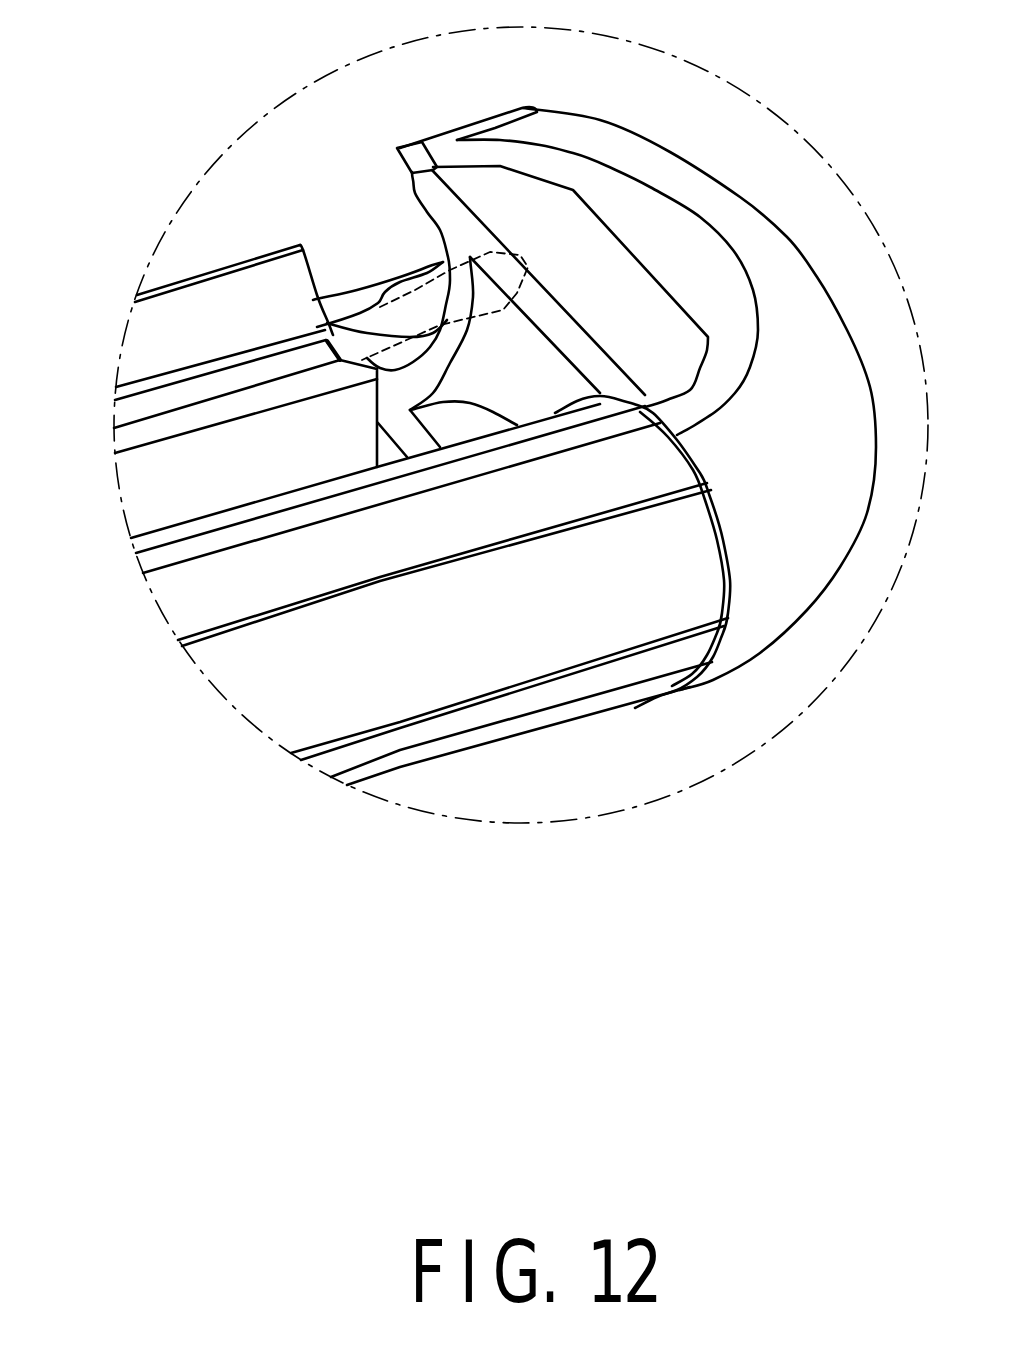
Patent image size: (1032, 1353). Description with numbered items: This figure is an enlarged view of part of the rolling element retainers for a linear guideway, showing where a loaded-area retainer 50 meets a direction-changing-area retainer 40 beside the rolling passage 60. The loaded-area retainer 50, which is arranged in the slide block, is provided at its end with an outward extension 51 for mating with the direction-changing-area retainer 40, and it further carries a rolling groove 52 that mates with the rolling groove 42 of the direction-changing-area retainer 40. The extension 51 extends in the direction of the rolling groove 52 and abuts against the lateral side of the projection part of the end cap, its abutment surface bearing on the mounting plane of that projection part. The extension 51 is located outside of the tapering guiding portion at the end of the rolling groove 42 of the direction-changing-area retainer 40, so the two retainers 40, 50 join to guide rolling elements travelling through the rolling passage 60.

The direction-changing-area retainer 40 is at (613, 267).
The rolling groove 42 is at (433, 305).
The loaded-area retainer 50 is at (182, 486).
The extension 51 is at (422, 308).
The rolling groove 52 is at (170, 327).
The rolling passage 60 is at (577, 620).